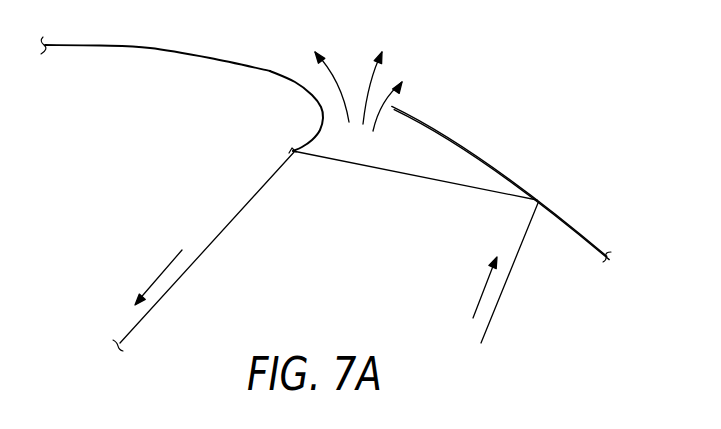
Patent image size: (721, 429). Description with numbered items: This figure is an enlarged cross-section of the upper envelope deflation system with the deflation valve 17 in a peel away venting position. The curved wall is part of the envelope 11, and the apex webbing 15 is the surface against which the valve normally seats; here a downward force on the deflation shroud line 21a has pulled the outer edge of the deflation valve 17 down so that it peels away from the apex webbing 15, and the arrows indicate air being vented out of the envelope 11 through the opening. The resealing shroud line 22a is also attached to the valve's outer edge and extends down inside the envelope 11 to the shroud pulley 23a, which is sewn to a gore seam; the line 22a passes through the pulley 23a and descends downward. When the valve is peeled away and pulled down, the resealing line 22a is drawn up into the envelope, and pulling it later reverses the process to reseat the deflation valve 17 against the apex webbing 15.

The envelope 11 is at (490, 150).
The apex webbing 15 is at (393, 105).
The deflation valve 17 is at (315, 125).
The deflation shroud line 21a is at (243, 203).
The resealing shroud line 22a is at (518, 270).
The shroud pulley 23a is at (533, 200).